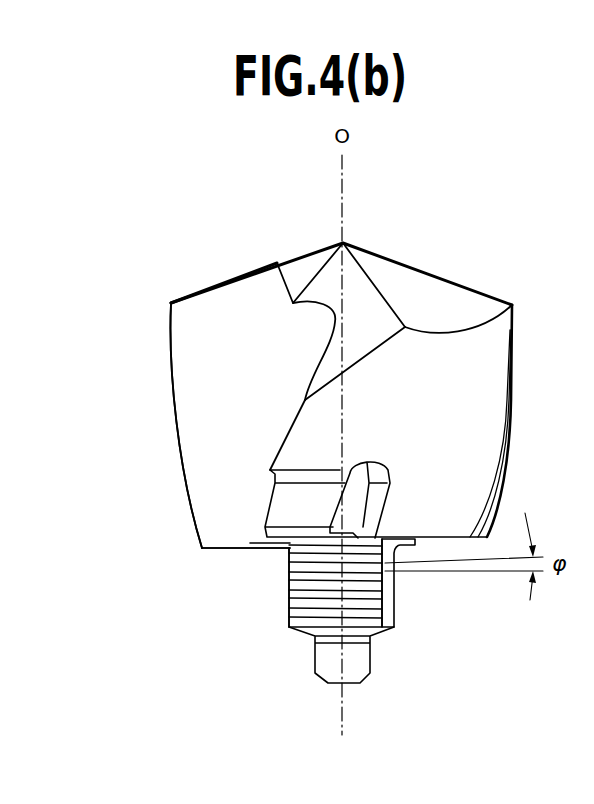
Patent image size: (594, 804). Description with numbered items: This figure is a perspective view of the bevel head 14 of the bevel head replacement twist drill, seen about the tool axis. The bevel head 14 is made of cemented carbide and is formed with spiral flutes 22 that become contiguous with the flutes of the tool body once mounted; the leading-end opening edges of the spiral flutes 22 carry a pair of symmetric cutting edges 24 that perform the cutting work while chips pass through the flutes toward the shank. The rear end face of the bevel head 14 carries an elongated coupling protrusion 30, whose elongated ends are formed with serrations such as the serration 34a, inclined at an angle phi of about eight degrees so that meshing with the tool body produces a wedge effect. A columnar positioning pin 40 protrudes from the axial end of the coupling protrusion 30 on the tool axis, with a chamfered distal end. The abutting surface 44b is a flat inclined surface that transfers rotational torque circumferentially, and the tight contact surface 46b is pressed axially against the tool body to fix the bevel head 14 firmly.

The bevel head 14 is at (516, 277).
The spiral flutes 22 is at (237, 402).
The cutting edges 24 is at (233, 275).
The coupling protrusion 30 is at (385, 597).
The serration 34a is at (274, 600).
The positioning pin 40 is at (353, 662).
The abutting surface 44b is at (388, 477).
The tight contact surface 46b is at (247, 552).